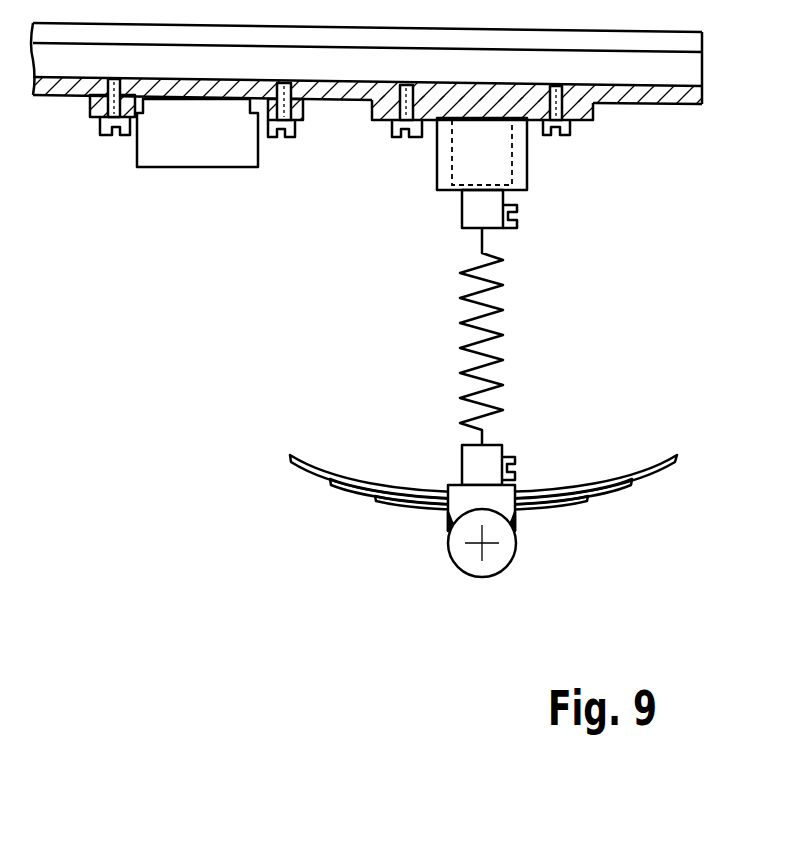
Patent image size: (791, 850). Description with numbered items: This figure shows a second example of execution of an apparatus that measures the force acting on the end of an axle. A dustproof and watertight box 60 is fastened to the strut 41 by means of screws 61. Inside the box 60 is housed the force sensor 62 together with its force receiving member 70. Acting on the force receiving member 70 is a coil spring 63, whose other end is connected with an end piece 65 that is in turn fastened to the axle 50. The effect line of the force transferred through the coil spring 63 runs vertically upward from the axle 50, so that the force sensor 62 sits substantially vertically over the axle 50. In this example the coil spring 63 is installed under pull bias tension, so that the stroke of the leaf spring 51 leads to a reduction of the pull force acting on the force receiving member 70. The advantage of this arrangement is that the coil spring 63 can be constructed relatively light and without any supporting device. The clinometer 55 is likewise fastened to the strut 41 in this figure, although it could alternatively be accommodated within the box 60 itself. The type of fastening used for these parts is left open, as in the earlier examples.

The strut 41 is at (101, 57).
The clinometer 55 is at (200, 133).
The screws 61 is at (404, 132).
The force sensor 62 is at (530, 148).
The box 60 is at (493, 168).
The force receiving member 70 is at (532, 236).
The coil spring 63 is at (500, 358).
The end piece 65 is at (592, 495).
The leaf spring 51 is at (542, 507).
The axle 50 is at (493, 558).